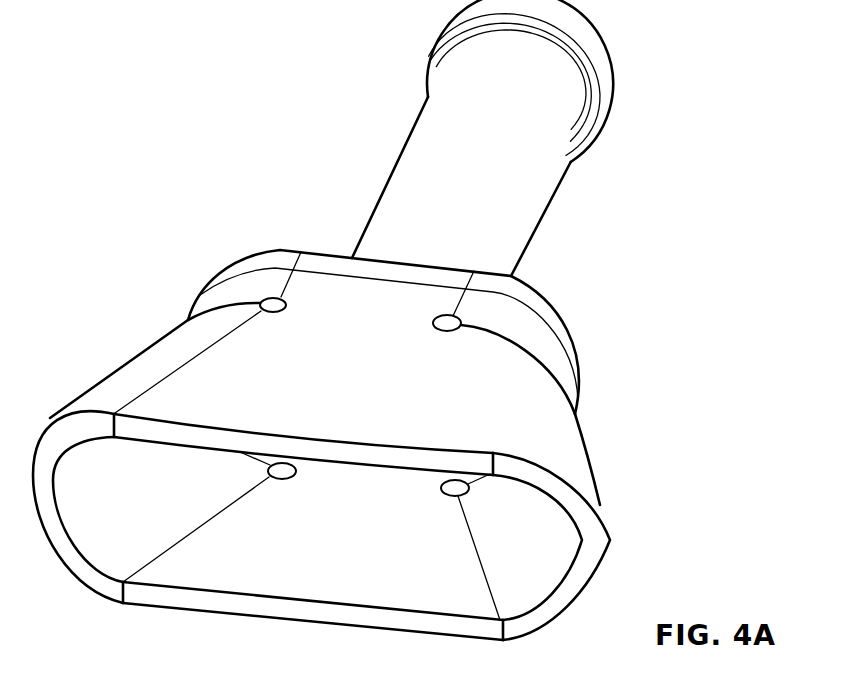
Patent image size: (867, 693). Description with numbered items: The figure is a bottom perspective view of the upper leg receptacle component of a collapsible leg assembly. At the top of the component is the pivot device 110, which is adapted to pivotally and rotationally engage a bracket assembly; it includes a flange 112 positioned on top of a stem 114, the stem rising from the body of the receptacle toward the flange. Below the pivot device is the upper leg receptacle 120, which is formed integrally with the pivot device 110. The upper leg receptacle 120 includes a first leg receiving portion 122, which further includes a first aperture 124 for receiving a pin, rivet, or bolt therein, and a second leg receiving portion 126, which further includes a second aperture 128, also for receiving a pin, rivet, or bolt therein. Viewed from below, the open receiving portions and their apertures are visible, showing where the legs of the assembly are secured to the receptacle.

The pivot device 110 is at (137, 152).
The flange 112 is at (610, 56).
The stem 114 is at (543, 178).
The upper leg receptacle 120 is at (332, 324).
The first leg receiving portion 122 is at (140, 356).
The first aperture 124 is at (272, 298).
The second leg receiving portion 126 is at (612, 547).
The second aperture 128 is at (460, 320).